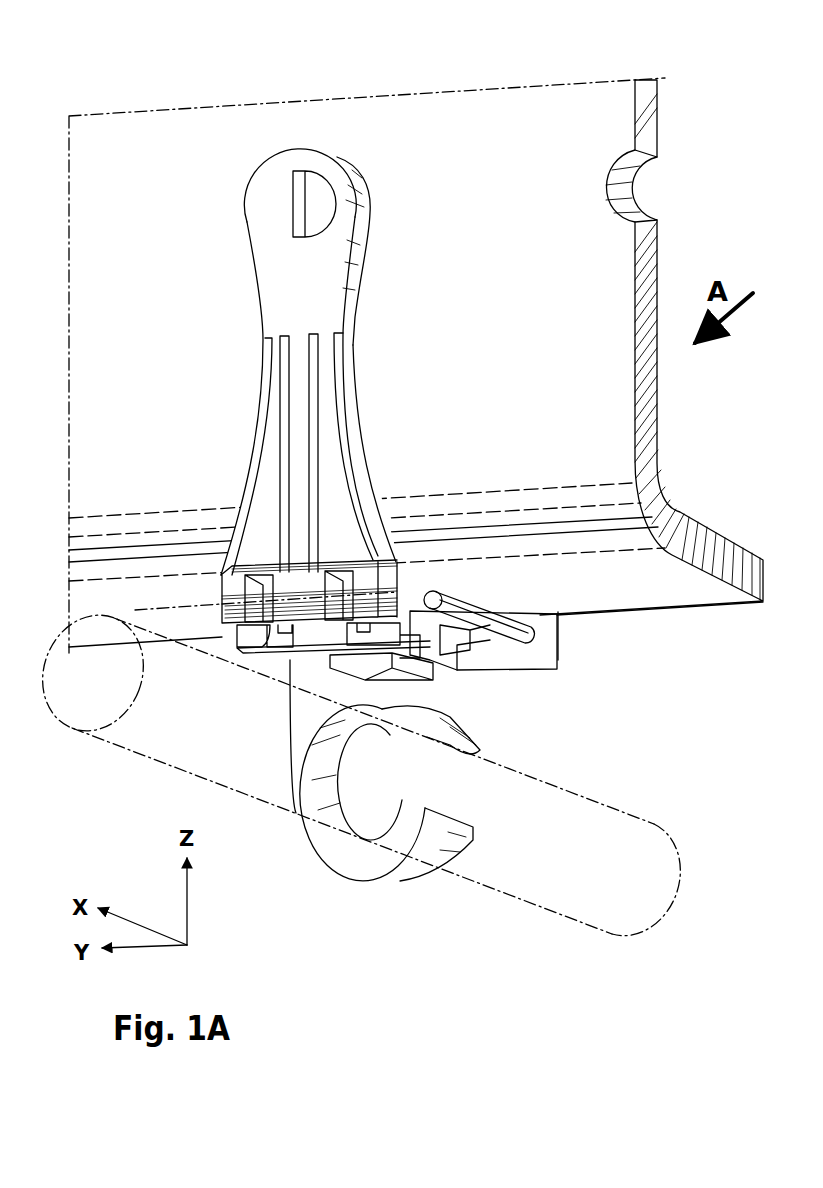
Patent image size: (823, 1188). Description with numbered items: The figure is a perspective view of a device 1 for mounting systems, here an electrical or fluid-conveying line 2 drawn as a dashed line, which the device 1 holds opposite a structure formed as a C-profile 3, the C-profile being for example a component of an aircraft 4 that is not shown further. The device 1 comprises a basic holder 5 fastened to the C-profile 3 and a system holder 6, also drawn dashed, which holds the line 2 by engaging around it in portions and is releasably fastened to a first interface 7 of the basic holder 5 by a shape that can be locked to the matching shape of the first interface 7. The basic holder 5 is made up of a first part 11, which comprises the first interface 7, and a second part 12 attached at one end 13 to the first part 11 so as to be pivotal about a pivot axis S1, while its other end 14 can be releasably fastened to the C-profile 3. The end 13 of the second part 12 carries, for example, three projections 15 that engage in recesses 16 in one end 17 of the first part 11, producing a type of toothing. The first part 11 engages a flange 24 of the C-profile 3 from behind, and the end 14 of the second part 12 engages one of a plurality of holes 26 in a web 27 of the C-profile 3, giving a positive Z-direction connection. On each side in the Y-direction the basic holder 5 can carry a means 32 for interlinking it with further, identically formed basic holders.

The device 1 is at (240, 318).
The line 2 is at (598, 817).
The C-profile 3 is at (660, 127).
The aircraft 4 is at (178, 99).
The basic holder 5 is at (562, 640).
The system holder 6 is at (360, 853).
The first interface 7 is at (447, 662).
The first part 11 is at (512, 658).
The second part 12 is at (272, 438).
The end 13 is at (225, 570).
The end 14 is at (262, 198).
The projections 15 is at (228, 588).
The recesses 16 is at (237, 642).
The end 17 is at (403, 762).
The flange 24 is at (663, 597).
The holes 26 is at (620, 195).
The web 27 is at (593, 107).
The means for interlinking 32 is at (545, 640).
The pivot axis S1 is at (157, 608).